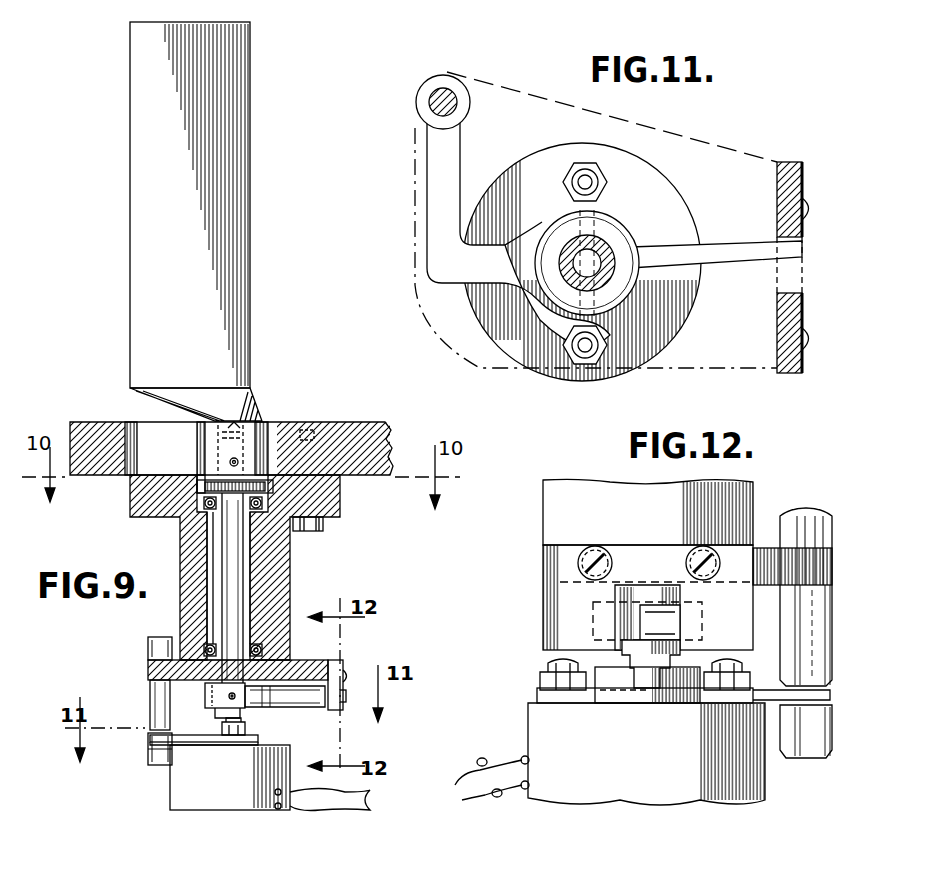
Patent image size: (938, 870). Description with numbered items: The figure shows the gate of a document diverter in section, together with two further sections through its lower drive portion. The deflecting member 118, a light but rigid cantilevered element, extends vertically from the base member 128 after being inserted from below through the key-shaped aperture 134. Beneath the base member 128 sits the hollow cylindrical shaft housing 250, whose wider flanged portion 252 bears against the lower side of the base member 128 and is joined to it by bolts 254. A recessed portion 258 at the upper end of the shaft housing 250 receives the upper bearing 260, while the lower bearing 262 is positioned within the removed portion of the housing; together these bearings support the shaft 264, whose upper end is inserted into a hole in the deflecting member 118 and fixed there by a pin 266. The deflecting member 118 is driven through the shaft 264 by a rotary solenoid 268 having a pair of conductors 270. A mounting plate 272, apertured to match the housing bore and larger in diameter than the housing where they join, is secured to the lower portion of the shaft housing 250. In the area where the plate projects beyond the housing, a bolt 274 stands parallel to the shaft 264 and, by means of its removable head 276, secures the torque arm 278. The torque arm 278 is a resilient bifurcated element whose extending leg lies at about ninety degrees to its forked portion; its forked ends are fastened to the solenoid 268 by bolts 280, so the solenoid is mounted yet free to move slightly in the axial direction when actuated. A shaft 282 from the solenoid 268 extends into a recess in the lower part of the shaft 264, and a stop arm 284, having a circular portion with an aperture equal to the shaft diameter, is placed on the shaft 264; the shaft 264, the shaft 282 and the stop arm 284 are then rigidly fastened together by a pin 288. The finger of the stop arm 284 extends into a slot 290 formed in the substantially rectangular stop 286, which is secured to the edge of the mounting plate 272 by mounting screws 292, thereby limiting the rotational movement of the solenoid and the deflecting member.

In FIG. 9, the deflecting member 118 is at (243, 105).
In FIG. 9, the base member 128 is at (338, 425).
In FIG. 9, the key-shaped aperture 134 is at (143, 427).
In FIG. 9, the shaft housing 250 is at (180, 603).
In FIG. 12, the shaft housing 250 is at (605, 493).
In FIG. 9, the flanged portion 252 is at (130, 500).
In FIG. 9, the bolts 254 is at (323, 522).
In FIG. 9, the recessed portion 258 is at (195, 485).
In FIG. 9, the upper bearing 260 is at (210, 503).
In FIG. 9, the lower bearing 262 is at (262, 650).
In FIG. 9, the shaft 264 is at (243, 562).
In FIG. 11, the shaft 264 is at (605, 240).
In FIG. 12, the shaft 264 is at (640, 592).
In FIG. 9, the pin 266 is at (240, 460).
In FIG. 9, the rotary solenoid 268 is at (178, 797).
In FIG. 11, the rotary solenoid 268 is at (630, 158).
In FIG. 12, the rotary solenoid 268 is at (538, 723).
In FIG. 9, the conductors 270 is at (366, 800).
In FIG. 12, the conductors 270 is at (460, 782).
In FIG. 9, the mounting plate 272 is at (150, 660).
In FIG. 11, the mounting plate 272 is at (727, 150).
In FIG. 12, the mounting plate 272 is at (770, 548).
In FIG. 9, the bolt 274 is at (150, 702).
In FIG. 11, the bolt 274 is at (443, 92).
In FIG. 12, the bolt 274 is at (795, 635).
In FIG. 9, the removable head 276 is at (148, 760).
In FIG. 12, the removable head 276 is at (803, 745).
In FIG. 9, the torque arm 278 is at (195, 745).
In FIG. 11, the torque arm 278 is at (427, 174).
In FIG. 12, the torque arm 278 is at (632, 692).
In FIG. 9, the bolts 280 is at (247, 730).
In FIG. 11, the bolts 280 is at (582, 160).
In FIG. 12, the bolts 280 is at (540, 680).
In FIG. 9, the shaft 282 is at (225, 700).
In FIG. 11, the shaft 282 is at (612, 282).
In FIG. 12, the shaft 282 is at (625, 660).
In FIG. 9, the stop arm 284 is at (315, 708).
In FIG. 11, the stop arm 284 is at (737, 250).
In FIG. 12, the stop arm 284 is at (690, 623).
In FIG. 11, the stop 286 is at (790, 165).
In FIG. 12, the stop 286 is at (555, 605).
In FIG. 11, the pin 288 is at (603, 215).
In FIG. 11, the slot 290 is at (778, 293).
In FIG. 12, the slot 290 is at (615, 628).
In FIG. 9, the mounting screws 292 is at (345, 665).
In FIG. 11, the mounting screws 292 is at (815, 212).
In FIG. 12, the mounting screws 292 is at (690, 552).